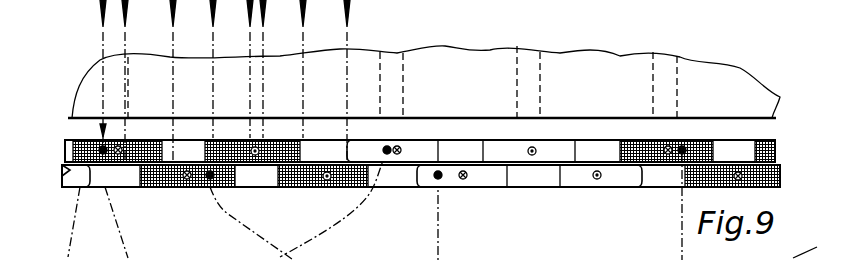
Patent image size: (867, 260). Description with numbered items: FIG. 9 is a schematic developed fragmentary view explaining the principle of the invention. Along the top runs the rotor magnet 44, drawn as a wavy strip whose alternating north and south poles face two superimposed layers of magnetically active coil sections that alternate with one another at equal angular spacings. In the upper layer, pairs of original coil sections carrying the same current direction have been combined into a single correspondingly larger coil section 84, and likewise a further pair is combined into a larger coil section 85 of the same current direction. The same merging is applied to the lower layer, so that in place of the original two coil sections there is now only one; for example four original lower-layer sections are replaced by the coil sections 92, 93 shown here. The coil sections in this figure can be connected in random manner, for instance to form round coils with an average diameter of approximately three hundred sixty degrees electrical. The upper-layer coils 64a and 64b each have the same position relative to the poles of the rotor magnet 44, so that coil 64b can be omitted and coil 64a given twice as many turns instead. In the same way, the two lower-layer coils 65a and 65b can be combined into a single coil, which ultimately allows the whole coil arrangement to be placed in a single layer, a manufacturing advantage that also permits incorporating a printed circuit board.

The rotor magnet 44 is at (440, 58).
The coil 64a is at (220, 140).
The coil 64b is at (497, 138).
The coil section 84 is at (83, 140).
The coil section 85 is at (273, 141).
The coil section 92 is at (151, 187).
The coil section 93 is at (341, 187).
The coil 65a is at (292, 187).
The coil 65b is at (578, 175).